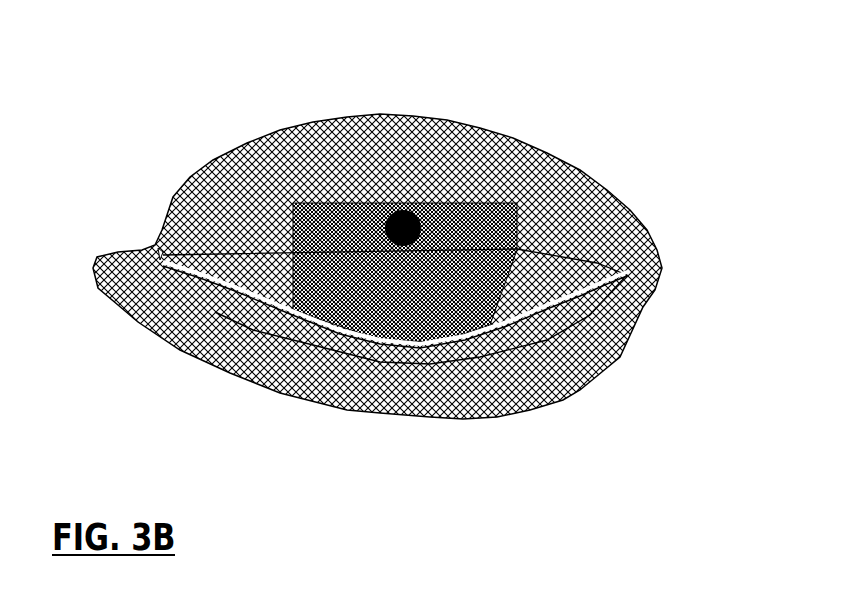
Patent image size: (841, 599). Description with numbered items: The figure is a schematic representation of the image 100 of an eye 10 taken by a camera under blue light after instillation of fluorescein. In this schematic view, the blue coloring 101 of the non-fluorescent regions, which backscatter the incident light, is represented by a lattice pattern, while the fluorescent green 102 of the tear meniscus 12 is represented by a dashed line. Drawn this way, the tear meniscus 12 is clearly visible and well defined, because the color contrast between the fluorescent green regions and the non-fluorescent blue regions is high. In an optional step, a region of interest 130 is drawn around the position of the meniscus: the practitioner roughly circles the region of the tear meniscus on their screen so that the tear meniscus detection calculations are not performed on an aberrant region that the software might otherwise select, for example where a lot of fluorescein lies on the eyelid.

The eye 10 is at (384, 267).
The tear meniscus 12 is at (298, 313).
The image 100 is at (385, 267).
The blue coloring 101 is at (352, 230).
The fluorescent green 102 is at (230, 320).
The region of interest 130 is at (410, 368).